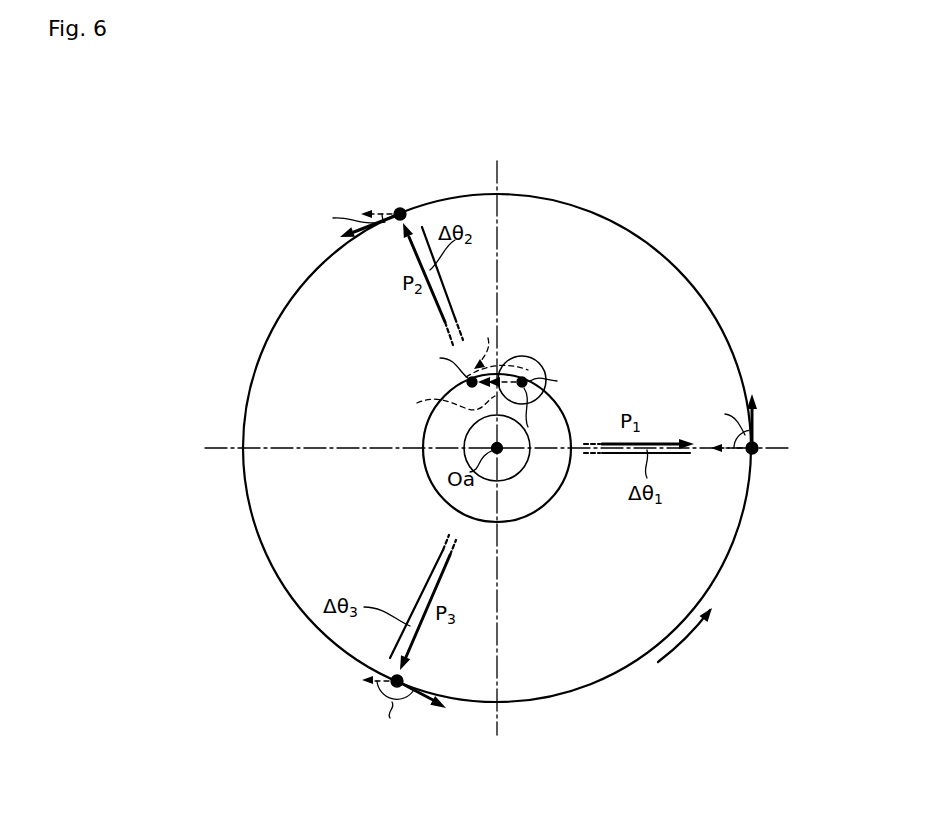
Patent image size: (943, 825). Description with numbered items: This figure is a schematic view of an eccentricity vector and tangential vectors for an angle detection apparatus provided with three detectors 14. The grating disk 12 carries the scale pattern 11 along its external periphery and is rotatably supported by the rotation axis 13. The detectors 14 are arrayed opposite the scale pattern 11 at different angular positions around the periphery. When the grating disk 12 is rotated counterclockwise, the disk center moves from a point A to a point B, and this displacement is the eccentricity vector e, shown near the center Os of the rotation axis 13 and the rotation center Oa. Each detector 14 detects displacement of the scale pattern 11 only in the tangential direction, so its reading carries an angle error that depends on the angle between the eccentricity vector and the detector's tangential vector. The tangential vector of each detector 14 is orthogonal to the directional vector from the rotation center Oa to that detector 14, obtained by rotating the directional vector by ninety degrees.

The scale pattern 11 is at (665, 257).
The grating disk 12 is at (612, 240).
The rotation axis 13 is at (536, 362).
The detector 14 is at (400, 208).